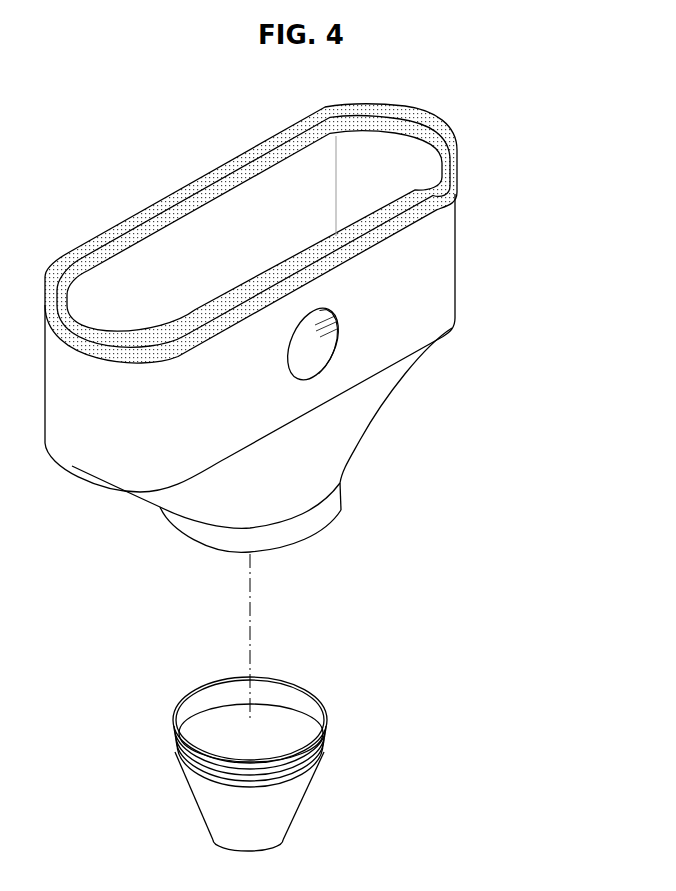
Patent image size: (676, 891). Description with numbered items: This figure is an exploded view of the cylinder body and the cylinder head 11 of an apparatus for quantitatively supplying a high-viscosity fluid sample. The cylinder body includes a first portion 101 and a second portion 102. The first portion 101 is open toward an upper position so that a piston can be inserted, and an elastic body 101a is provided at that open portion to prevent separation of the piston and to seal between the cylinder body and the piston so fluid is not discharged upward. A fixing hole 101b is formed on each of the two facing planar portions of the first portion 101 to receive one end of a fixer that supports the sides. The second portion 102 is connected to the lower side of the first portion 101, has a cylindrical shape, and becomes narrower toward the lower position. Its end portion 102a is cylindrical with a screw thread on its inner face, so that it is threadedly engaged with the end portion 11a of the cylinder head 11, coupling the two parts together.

The first portion 101 is at (309, 298).
The elastic body 101a is at (452, 150).
The fixing hole 101b is at (312, 352).
The second portion 102 is at (277, 448).
The end portion 102a is at (313, 527).
The cylinder head 11 is at (294, 764).
The end portion 11a is at (327, 743).